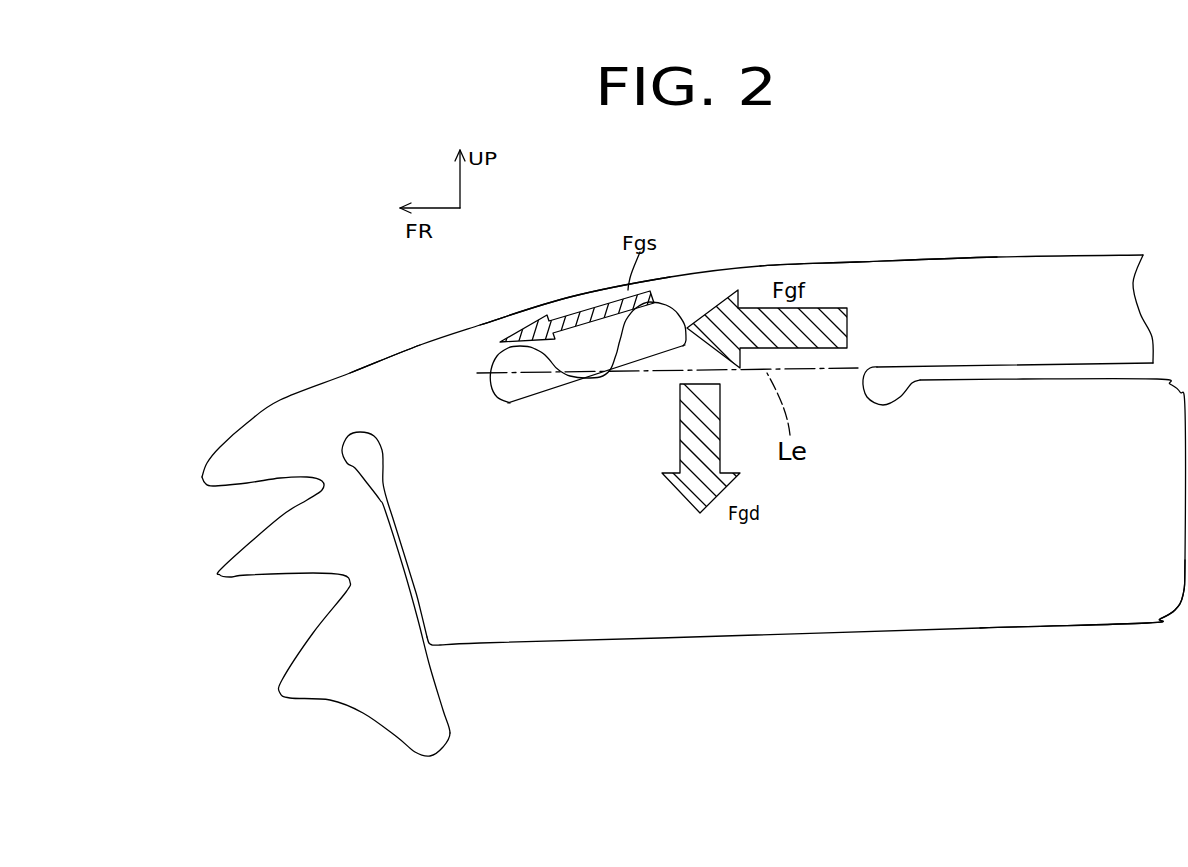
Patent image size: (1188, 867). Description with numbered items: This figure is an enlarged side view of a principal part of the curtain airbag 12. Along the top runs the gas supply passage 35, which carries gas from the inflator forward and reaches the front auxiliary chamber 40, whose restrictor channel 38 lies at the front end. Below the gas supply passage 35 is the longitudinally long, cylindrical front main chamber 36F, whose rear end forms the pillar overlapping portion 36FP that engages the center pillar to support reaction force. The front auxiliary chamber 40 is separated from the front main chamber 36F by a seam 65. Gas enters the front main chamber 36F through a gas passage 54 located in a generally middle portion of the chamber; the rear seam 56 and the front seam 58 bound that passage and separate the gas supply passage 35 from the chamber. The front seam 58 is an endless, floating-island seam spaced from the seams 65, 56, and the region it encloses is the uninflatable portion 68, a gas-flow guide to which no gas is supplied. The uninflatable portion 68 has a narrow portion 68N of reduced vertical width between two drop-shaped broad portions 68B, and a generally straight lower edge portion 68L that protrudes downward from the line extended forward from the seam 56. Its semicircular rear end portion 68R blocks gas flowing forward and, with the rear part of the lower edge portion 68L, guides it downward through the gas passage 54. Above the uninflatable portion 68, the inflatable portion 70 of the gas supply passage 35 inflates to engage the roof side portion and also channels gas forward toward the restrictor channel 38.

The curtain airbag 12 is at (997, 257).
The gas supply passage 35 is at (903, 278).
The front main chamber 36F is at (660, 625).
The pillar overlapping portion 36FP is at (1008, 587).
The restrictor channel 38 is at (348, 403).
The front auxiliary chamber 40 is at (430, 720).
The gas passage 54 is at (853, 383).
The rear seam 56 is at (993, 367).
The front seam 58 is at (503, 406).
The seam 65 is at (407, 590).
The uninflatable portion 68 is at (675, 446).
The broad portions 68B is at (522, 385).
The lower edge portion 68L is at (553, 395).
The narrow portion 68N is at (600, 381).
The rear end portion 68R is at (690, 305).
The inflatable portion 70 is at (562, 308).